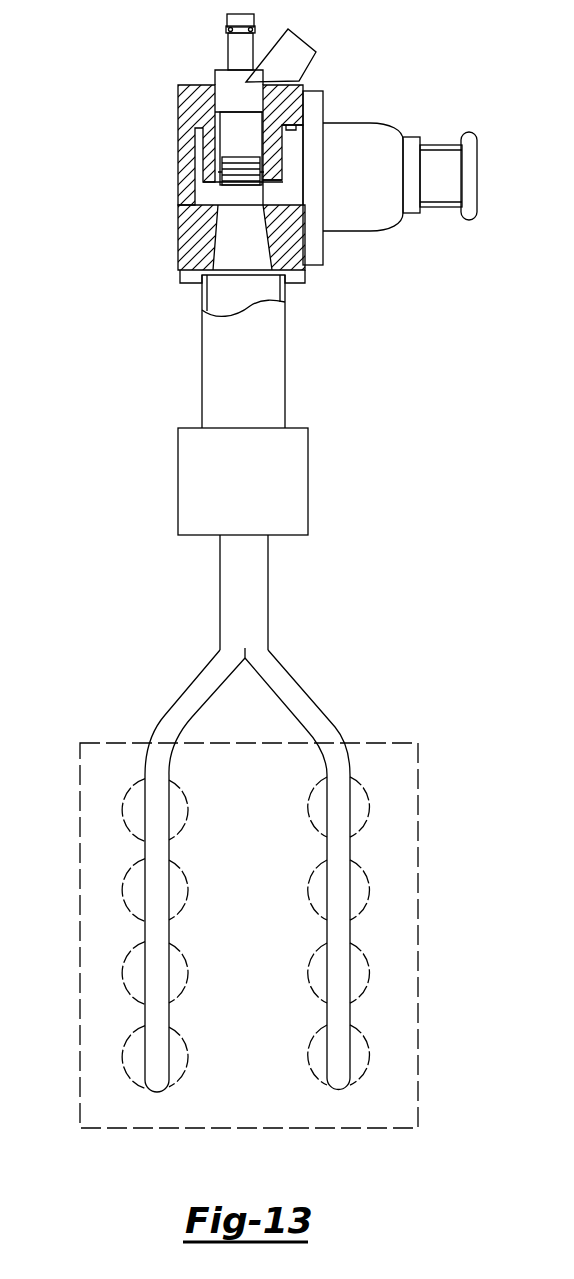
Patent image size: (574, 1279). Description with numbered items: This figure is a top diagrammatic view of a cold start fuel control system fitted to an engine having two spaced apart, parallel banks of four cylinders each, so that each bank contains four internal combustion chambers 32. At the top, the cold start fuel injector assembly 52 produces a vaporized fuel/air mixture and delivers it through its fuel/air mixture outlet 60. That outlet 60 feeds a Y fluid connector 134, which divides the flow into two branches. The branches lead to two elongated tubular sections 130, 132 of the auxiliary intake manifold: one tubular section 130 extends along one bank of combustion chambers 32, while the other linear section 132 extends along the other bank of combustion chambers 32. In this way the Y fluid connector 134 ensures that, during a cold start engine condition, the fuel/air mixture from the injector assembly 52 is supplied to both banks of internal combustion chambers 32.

The cold start fuel injector assembly 52 is at (352, 93).
The outlet 60 is at (308, 463).
The Y fluid connector 134 is at (245, 813).
The tubular section 130 is at (145, 935).
The tubular section 132 is at (352, 1015).
The internal combustion chamber 32 is at (390, 817).